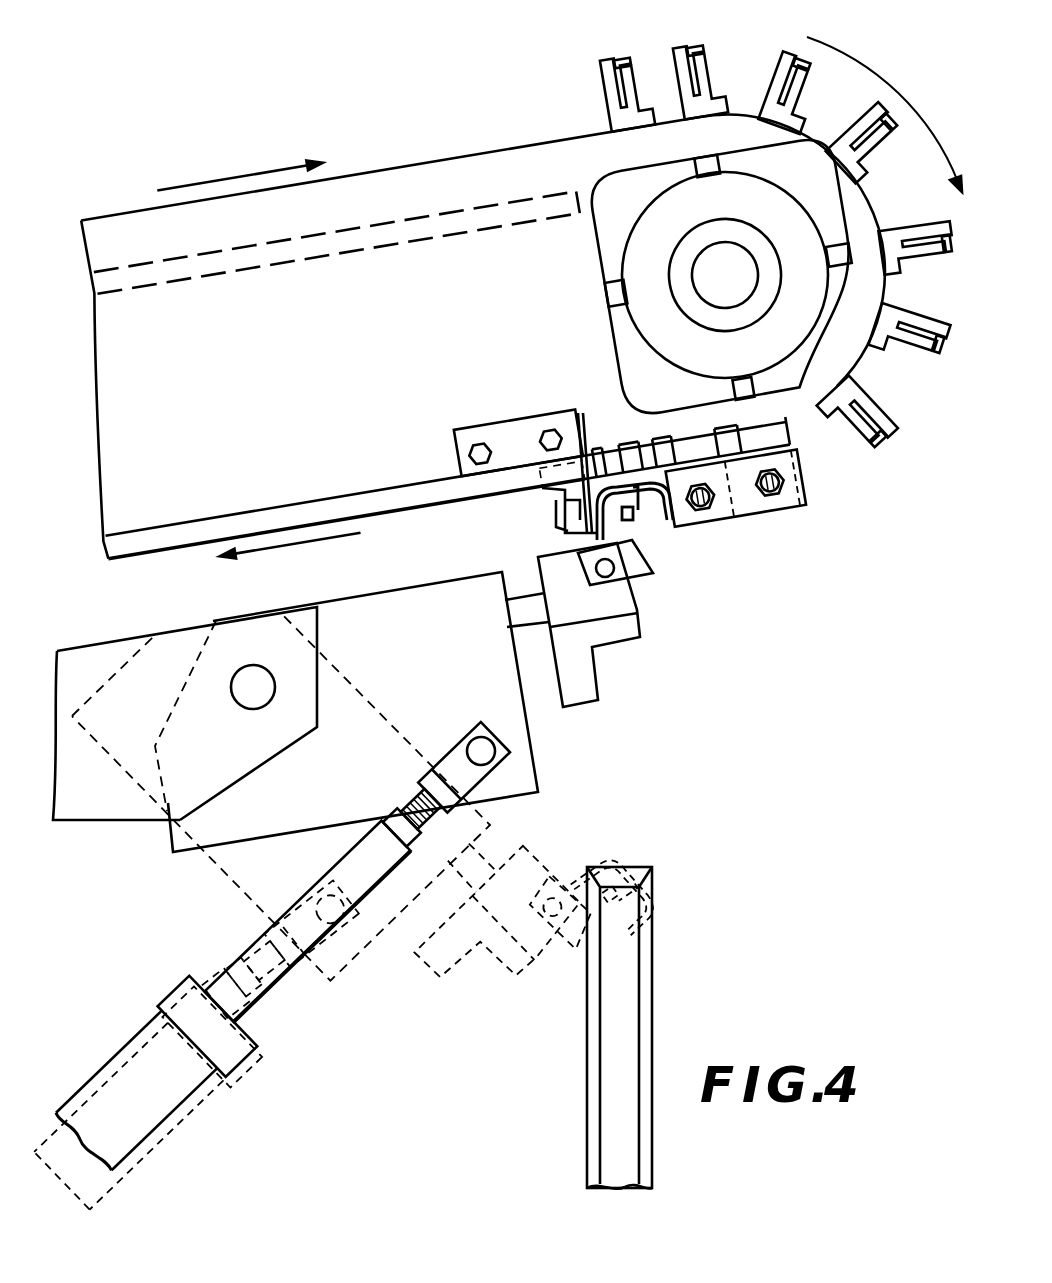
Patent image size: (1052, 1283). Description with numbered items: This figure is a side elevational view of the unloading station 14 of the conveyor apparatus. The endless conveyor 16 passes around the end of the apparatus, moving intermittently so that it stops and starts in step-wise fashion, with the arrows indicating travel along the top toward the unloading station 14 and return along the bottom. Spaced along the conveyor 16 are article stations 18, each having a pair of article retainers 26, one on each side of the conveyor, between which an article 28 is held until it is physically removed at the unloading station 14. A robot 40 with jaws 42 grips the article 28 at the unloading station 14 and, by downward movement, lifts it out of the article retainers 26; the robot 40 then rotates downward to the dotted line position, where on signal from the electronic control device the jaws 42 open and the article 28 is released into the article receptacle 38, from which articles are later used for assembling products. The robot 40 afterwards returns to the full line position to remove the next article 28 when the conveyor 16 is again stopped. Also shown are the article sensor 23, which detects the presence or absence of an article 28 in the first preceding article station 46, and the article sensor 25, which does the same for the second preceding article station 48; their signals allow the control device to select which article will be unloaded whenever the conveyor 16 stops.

The unloading station 14 is at (580, 540).
The endless conveyor 16 is at (394, 160).
The article station 18 is at (915, 272).
The article sensor 23 is at (712, 504).
The article sensor 25 is at (790, 484).
The article retainer 26 is at (670, 76).
The article 28 is at (807, 63).
The article receptacle 38 is at (662, 950).
The robot 40 is at (615, 653).
The jaws 42 is at (638, 532).
The first preceding article station 46 is at (704, 522).
The second preceding article station 48 is at (786, 496).